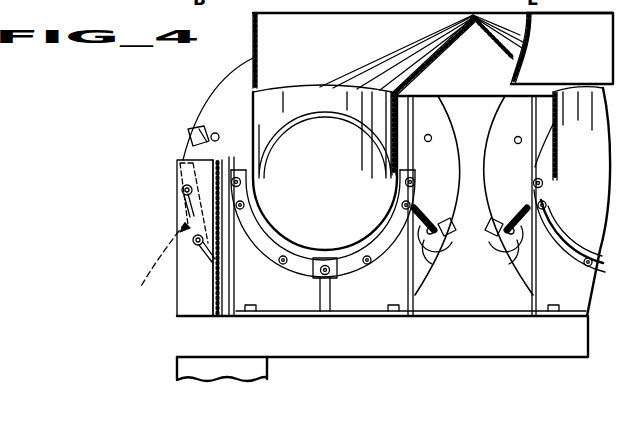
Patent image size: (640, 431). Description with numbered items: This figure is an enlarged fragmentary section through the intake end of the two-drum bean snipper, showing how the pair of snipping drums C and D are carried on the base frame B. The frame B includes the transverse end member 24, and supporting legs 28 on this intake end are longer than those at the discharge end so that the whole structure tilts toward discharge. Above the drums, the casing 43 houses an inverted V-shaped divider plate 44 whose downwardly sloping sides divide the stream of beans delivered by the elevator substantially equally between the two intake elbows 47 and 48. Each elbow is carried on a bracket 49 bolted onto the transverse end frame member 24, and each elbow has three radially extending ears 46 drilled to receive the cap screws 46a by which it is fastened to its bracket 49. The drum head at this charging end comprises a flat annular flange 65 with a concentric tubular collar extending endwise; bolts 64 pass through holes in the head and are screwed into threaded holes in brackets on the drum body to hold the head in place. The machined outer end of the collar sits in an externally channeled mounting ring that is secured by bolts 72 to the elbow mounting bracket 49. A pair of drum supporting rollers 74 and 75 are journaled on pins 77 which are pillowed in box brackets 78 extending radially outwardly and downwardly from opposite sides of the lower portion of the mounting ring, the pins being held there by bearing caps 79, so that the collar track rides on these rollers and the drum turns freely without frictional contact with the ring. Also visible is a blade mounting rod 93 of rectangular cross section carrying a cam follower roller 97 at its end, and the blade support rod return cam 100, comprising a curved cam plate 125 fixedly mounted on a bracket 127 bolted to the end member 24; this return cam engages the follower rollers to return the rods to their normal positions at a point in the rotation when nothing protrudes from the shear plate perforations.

The transverse end member 24 is at (200, 333).
The supporting legs 28 is at (203, 368).
The casing 43 is at (367, 39).
The divider plate 44 is at (503, 50).
The radially extending ears 46 is at (406, 182).
The cap screws 46a is at (243, 177).
The intake elbow 47 is at (327, 169).
The intake elbow 48 is at (600, 185).
The brackets 49 is at (557, 288).
The bolts 64 is at (461, 166).
The flat annular flange 65 is at (513, 110).
The bolts 72 is at (363, 256).
The drum supporting roller 74 is at (423, 253).
The drum supporting roller 75 is at (505, 257).
The pins 77 is at (625, 319).
The box brackets 78 is at (445, 195).
The bearing caps 79 is at (625, 359).
The blade mounting rod 93 is at (188, 150).
The cam follower roller 97 is at (189, 134).
The blade support rod return cam 100 is at (134, 302).
The return cam plate 125 is at (245, 4).
The bracket 127 is at (195, 295).
The base frame B is at (428, 350).
The snipping drum C is at (228, 108).
The snipping drum D is at (540, 113).